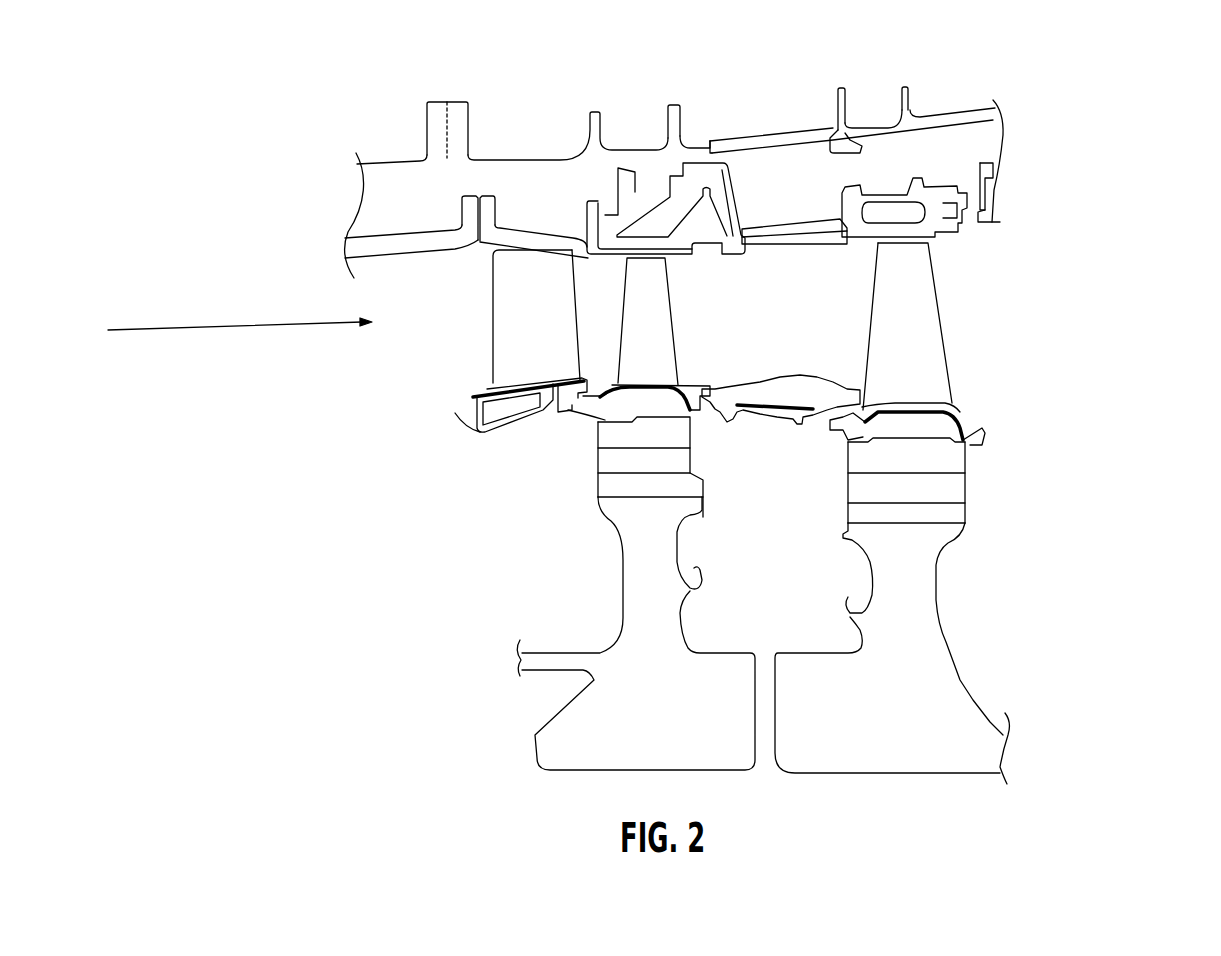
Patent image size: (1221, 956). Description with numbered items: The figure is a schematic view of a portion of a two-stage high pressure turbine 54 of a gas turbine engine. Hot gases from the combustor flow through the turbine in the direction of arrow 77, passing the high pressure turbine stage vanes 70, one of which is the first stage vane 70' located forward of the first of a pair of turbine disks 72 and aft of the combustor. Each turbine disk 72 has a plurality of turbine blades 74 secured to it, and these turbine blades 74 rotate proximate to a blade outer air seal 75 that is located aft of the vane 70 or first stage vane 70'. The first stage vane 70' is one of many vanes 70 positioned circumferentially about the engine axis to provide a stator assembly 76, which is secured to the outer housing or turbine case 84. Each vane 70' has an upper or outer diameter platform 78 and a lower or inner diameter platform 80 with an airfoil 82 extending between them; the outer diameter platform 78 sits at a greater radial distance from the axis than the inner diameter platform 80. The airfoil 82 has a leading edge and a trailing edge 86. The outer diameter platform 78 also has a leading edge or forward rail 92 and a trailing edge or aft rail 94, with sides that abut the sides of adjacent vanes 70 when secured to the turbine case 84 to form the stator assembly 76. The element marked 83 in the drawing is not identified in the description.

The high pressure turbine 54 is at (1127, 136).
The high pressure turbine stage vane 70 is at (885, 323).
The first stage vane 70' is at (476, 332).
The turbine disk 72 is at (633, 655).
The turbine blade 74 is at (632, 373).
The blade outer air seal 75 is at (657, 250).
The stator assembly 76 is at (527, 201).
The arrow 77 is at (240, 326).
The outer diameter platform 78 is at (527, 240).
The inner diameter platform 80 is at (490, 380).
The airfoil 82 is at (747, 283).
The shroud 83 is at (706, 148).
The turbine case 84 is at (493, 325).
The trailing edge 86 is at (570, 295).
The forward rail 92 is at (463, 225).
The aft rail 94 is at (590, 253).